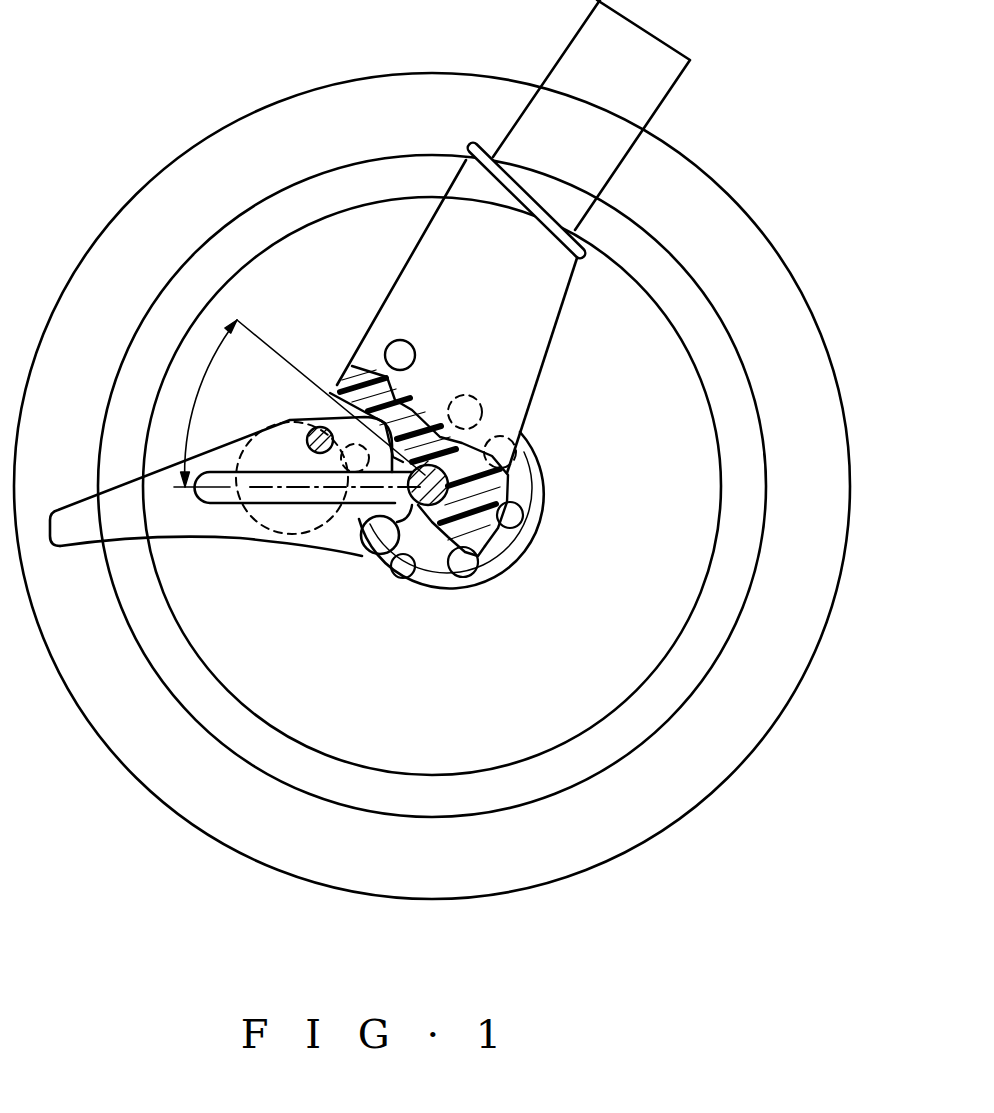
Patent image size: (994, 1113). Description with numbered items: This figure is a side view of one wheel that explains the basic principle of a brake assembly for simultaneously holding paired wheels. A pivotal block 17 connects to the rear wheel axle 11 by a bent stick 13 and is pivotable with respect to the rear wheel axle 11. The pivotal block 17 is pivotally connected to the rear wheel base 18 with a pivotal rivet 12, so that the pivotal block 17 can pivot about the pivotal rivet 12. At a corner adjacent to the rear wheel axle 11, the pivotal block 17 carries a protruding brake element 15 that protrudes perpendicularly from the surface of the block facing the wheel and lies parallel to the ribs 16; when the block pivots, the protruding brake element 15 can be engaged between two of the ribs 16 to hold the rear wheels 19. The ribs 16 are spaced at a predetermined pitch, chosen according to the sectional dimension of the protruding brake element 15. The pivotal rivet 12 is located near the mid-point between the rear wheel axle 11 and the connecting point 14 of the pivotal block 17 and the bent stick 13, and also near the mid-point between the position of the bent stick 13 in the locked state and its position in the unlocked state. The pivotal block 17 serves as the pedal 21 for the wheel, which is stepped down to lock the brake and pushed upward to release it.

The rear wheel axle 11 is at (446, 470).
The pivotal rivet 12 is at (313, 427).
The bent stick 13 is at (296, 512).
The connecting point 14 is at (208, 458).
The protruding brake element 15 is at (372, 552).
The ribs 16 is at (398, 568).
The pivotal block 17 is at (199, 530).
The rear wheel base 18 is at (422, 270).
The rear wheels 19 is at (395, 882).
The pedals 21 is at (74, 500).